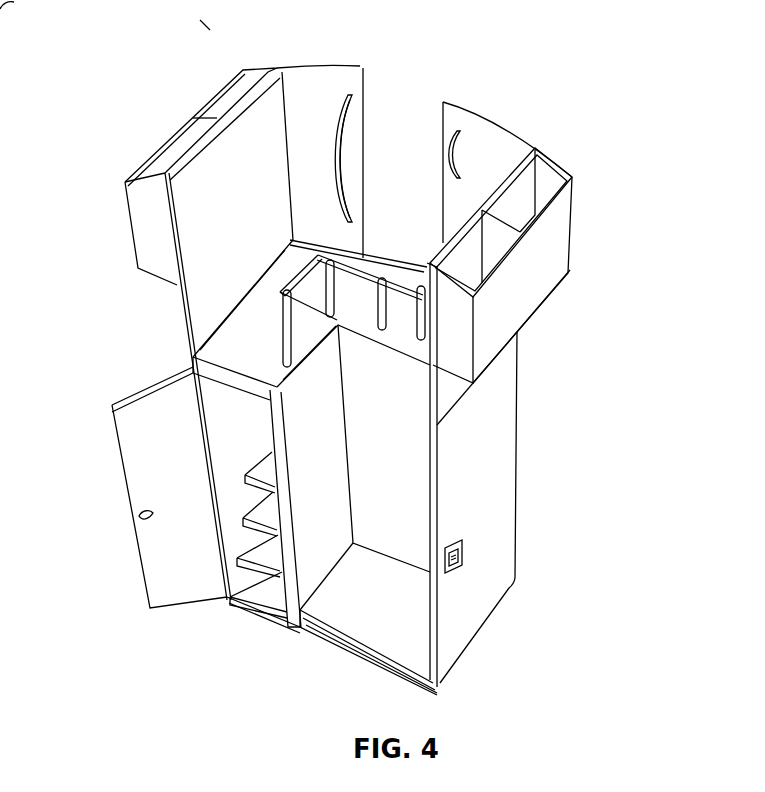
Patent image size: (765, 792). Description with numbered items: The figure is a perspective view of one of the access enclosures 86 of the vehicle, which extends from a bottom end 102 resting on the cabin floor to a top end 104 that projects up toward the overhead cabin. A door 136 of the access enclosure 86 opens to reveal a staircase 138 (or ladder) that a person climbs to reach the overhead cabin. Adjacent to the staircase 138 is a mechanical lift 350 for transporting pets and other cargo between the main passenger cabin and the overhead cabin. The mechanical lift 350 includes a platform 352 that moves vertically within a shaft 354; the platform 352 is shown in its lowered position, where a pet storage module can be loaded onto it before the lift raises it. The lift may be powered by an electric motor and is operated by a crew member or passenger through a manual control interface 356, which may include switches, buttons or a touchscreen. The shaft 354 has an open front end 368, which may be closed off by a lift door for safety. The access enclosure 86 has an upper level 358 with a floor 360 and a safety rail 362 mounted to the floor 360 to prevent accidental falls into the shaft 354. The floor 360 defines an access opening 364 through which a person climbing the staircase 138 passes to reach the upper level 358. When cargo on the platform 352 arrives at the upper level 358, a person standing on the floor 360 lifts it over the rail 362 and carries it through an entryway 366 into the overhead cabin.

The bottom end 102 is at (457, 703).
The top end 104 is at (512, 87).
The door 136 is at (28, 6).
The access enclosure 86 is at (205, 20).
The staircase 138 is at (233, 553).
The mechanical lift 350 is at (502, 500).
The platform 352 is at (385, 620).
The shaft 354 is at (293, 428).
The manual control interface 356 is at (462, 562).
The upper level 358 is at (213, 298).
The floor 360 is at (193, 358).
The safety rail 362 is at (371, 270).
The access opening 364 is at (262, 320).
The entryway 366 is at (400, 118).
The open front end 368 is at (301, 556).